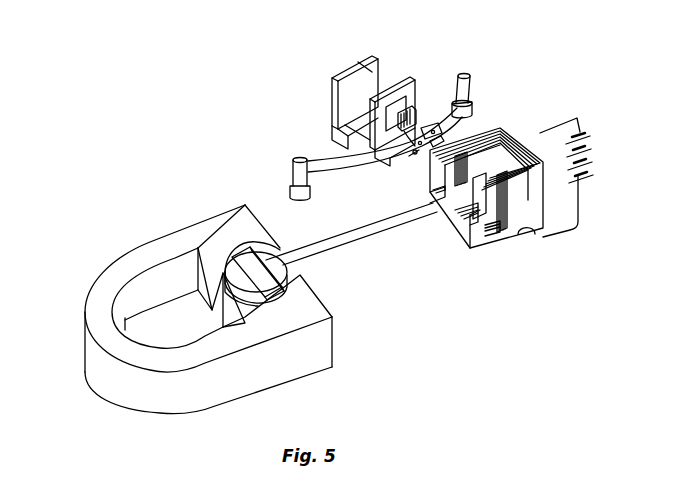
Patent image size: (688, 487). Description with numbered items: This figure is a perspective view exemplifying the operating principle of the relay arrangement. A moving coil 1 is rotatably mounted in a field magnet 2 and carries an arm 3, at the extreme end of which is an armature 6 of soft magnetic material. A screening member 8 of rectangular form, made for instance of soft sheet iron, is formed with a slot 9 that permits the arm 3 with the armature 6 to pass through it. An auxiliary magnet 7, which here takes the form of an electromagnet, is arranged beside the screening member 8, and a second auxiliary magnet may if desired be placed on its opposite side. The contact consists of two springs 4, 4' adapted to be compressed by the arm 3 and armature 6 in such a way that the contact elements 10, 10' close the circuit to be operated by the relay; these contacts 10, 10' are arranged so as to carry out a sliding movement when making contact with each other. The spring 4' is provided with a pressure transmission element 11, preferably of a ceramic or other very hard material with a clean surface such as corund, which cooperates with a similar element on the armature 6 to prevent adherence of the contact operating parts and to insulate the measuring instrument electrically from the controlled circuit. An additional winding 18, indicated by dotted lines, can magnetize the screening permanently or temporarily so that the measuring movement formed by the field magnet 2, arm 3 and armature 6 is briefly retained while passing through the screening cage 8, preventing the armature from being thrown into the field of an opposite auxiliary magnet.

The moving coil 1 is at (288, 279).
The field magnet 2 is at (108, 275).
The arm 3 is at (393, 227).
The spring 4 is at (390, 114).
The spring 4' is at (321, 179).
The armature 6 is at (477, 197).
The auxiliary magnet 7 is at (377, 73).
The screening member 8 is at (460, 233).
The slot 9 is at (465, 172).
The contact element 10 is at (430, 112).
The contact element 10' is at (474, 124).
The pressure transmission element 11 is at (415, 154).
The additional winding 18 is at (580, 207).